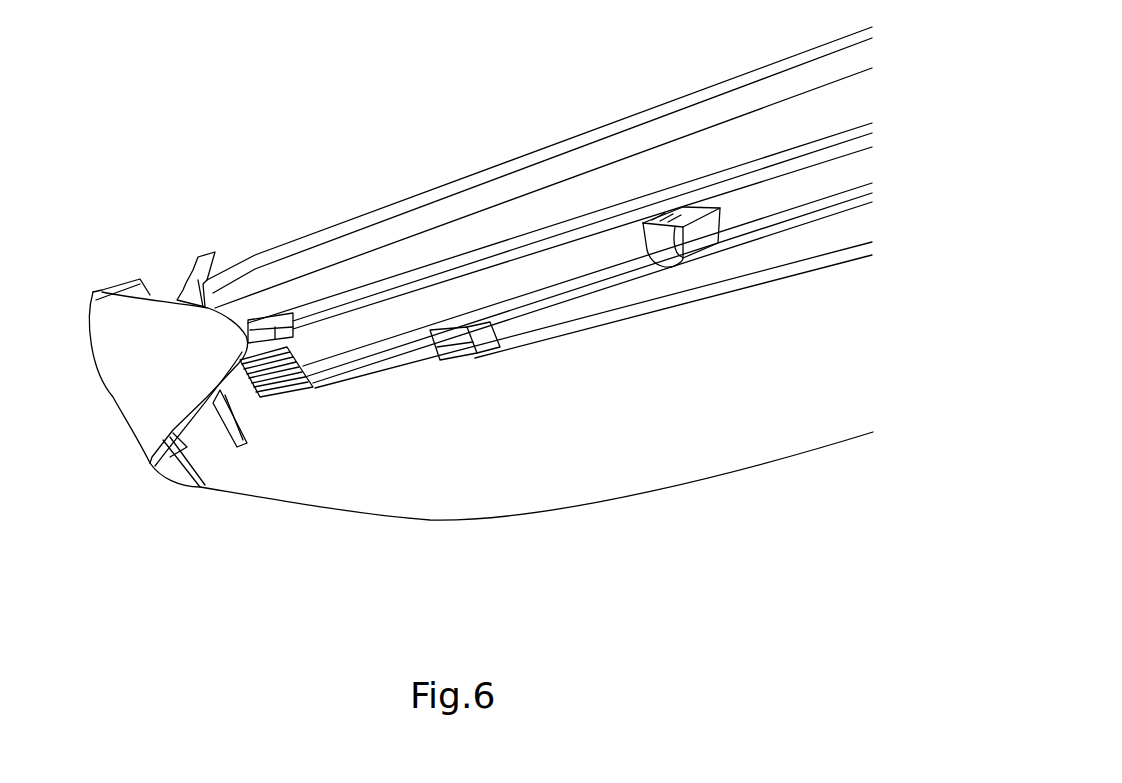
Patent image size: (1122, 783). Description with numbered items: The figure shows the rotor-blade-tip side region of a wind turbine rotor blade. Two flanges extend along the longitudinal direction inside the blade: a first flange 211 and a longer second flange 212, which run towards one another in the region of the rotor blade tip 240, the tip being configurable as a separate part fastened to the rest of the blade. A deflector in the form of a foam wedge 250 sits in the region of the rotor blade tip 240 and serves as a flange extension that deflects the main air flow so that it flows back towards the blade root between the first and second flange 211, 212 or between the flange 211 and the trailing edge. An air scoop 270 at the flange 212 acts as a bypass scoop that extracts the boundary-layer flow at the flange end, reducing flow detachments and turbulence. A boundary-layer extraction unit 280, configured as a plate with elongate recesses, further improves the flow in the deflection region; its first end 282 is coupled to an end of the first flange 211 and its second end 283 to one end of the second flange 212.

The first flange 211 is at (622, 345).
The second flange 212 is at (420, 268).
The rotor blade tip 240 is at (140, 430).
The foam wedge 250 is at (190, 268).
The air scoop 270 is at (680, 213).
The boundary-layer extraction unit 280 is at (297, 363).
The first end 282 is at (412, 363).
The second end 283 is at (295, 340).